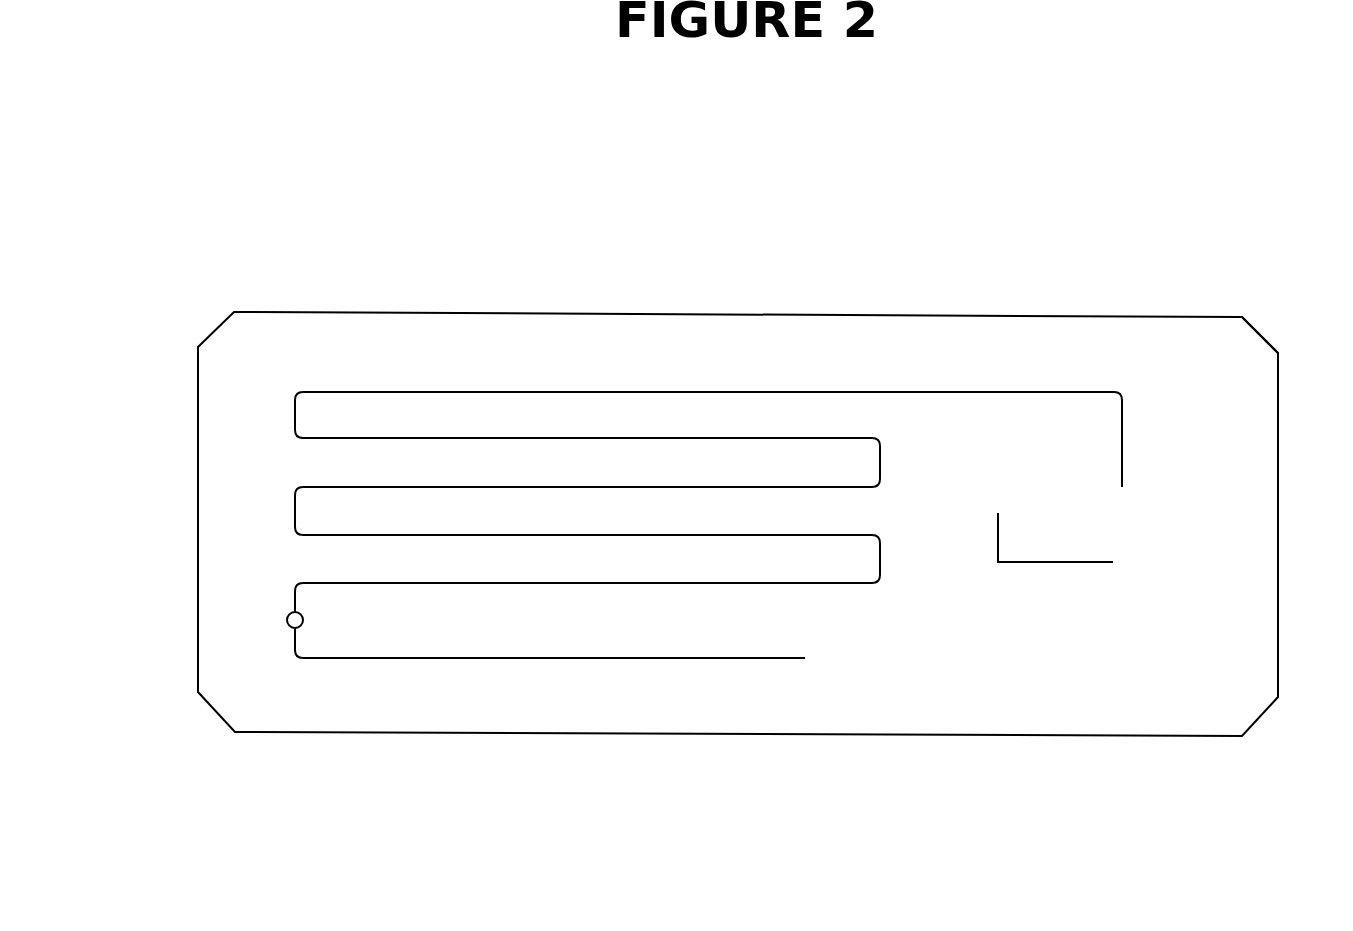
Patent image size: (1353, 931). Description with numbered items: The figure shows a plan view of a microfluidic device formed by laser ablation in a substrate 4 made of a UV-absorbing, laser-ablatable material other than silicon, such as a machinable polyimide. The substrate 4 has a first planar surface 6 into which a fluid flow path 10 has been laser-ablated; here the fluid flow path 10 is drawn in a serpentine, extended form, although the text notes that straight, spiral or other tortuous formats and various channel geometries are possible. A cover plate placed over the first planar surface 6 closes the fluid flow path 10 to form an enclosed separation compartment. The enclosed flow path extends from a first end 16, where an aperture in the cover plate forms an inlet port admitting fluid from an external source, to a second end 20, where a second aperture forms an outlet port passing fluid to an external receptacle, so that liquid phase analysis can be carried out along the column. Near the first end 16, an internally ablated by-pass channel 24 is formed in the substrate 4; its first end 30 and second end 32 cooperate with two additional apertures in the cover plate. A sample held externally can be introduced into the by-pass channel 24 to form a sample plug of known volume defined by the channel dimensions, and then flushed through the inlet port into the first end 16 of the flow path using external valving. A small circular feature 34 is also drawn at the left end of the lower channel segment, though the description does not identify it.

The substrate 4 is at (420, 312).
The first planar surface 6 is at (1195, 347).
The fluid flow path 10 is at (767, 392).
The first end 16 is at (1127, 482).
The second end 20 is at (805, 660).
The by-pass channel 24 is at (1062, 568).
The first end of by-pass channel 30 is at (998, 513).
The second end of by-pass channel 32 is at (1113, 562).
The via / contact pad 34 is at (288, 624).